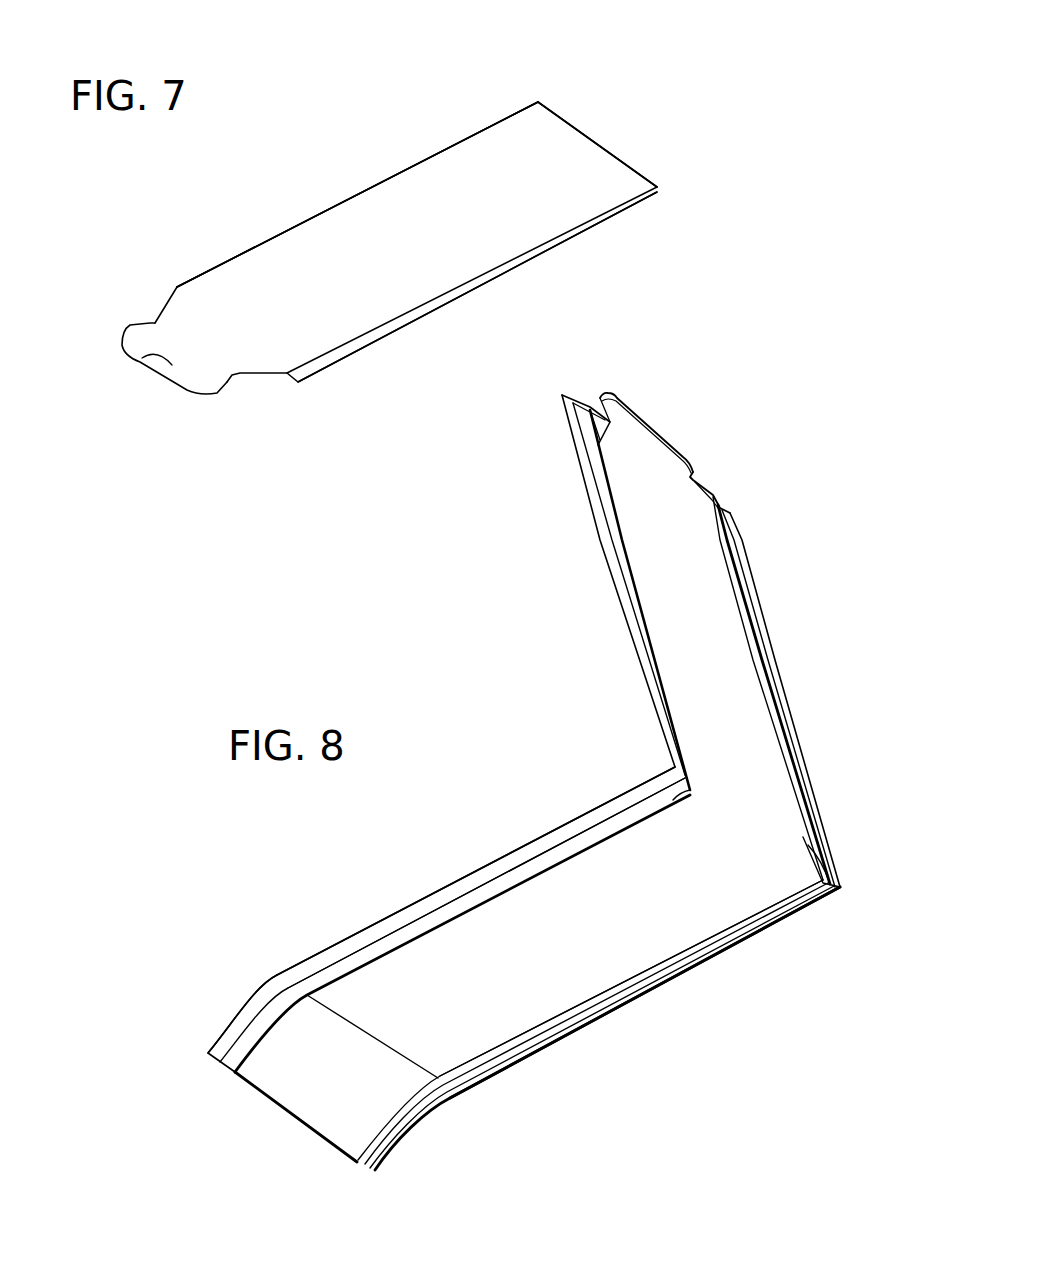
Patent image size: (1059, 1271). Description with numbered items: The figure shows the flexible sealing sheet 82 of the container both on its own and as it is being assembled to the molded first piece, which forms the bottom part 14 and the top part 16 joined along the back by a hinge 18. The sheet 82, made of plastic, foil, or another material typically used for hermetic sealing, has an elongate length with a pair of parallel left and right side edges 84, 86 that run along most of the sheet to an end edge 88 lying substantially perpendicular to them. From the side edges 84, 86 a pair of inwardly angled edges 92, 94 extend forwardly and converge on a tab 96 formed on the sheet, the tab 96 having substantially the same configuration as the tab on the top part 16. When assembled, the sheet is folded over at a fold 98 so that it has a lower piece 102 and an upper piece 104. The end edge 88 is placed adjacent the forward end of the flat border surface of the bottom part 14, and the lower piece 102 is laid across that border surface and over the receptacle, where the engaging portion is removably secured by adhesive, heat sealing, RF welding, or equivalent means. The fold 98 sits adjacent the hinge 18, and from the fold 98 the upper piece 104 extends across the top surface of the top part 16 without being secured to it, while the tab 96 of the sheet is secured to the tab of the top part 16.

In FIG. 8, the bottom part 14 is at (560, 1040).
In FIG. 8, the top part 16 is at (770, 634).
In FIG. 8, the hinge 18 is at (843, 887).
In FIG. 7, the flexible sheet 82 is at (403, 212).
In FIG. 8, the flexible sheet 82 is at (529, 908).
In FIG. 7, the left side edge 84 is at (270, 233).
In FIG. 8, the left side edge 84 is at (427, 930).
In FIG. 7, the right side edge 86 is at (367, 337).
In FIG. 8, the right side edge 86 is at (610, 980).
In FIG. 8, the end edge 88 is at (337, 1022).
In FIG. 7, the inwardly angled edge 92 is at (163, 303).
In FIG. 8, the inwardly angled edge 92 is at (590, 409).
In FIG. 7, the inwardly angled edge 94 is at (260, 377).
In FIG. 8, the inwardly angled edge 94 is at (710, 527).
In FIG. 7, the tab 96 is at (142, 360).
In FIG. 8, the tab 96 is at (643, 413).
In FIG. 7, the fold 98 is at (623, 158).
In FIG. 7, the lower piece 102 is at (471, 291).
In FIG. 7, the upper piece 104 is at (330, 209).